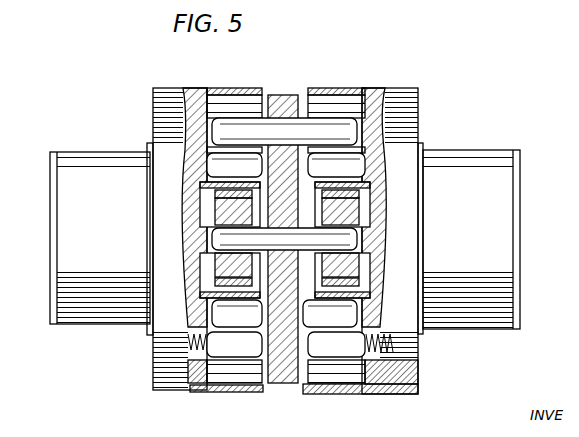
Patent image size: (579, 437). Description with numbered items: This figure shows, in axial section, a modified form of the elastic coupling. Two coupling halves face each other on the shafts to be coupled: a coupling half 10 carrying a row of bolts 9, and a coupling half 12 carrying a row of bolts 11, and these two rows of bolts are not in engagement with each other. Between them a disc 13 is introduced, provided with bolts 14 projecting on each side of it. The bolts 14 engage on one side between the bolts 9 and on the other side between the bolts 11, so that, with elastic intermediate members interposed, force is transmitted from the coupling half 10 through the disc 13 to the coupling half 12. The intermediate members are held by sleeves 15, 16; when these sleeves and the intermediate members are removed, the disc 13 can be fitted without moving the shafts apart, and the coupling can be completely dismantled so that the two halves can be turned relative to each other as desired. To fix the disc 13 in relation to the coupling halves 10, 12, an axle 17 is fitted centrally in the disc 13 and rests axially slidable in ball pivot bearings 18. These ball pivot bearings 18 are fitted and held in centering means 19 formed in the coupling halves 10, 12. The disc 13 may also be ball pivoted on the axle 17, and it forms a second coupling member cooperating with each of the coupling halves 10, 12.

The bolts 9 is at (213, 158).
The coupling half 10 is at (188, 125).
The bolts 11 is at (353, 157).
The coupling half 12 is at (370, 103).
The disc 13 is at (287, 97).
The bolts 14 is at (233, 127).
The sleeve 15 is at (200, 390).
The sleeve 16 is at (370, 392).
The axle 17 is at (343, 237).
The ball pivot bearings 18 is at (357, 197).
The centering means 19 is at (367, 177).